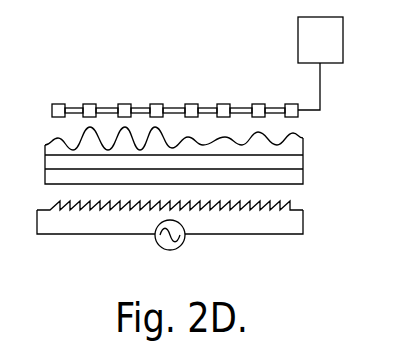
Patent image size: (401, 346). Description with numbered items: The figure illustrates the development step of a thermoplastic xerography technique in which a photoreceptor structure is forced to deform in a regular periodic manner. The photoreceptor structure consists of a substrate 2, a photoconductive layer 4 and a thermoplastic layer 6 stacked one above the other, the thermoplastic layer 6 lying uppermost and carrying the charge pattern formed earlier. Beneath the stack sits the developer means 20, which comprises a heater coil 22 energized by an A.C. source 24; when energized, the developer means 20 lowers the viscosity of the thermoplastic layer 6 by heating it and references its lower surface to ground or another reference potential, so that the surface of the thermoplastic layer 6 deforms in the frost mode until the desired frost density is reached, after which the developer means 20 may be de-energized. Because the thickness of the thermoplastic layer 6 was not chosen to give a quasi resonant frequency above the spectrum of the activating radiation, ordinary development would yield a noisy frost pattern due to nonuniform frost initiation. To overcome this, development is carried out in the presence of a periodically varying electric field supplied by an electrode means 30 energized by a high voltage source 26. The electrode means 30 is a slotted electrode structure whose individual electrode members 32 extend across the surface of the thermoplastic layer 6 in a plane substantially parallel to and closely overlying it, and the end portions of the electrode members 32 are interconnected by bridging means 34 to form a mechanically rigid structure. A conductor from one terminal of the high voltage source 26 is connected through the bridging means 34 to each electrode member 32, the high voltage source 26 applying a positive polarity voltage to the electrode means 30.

The substrate 2 is at (303, 173).
The photoconductive layer 4 is at (303, 160).
The thermoplastic layer 6 is at (303, 145).
The developer means 20 is at (200, 239).
The heater coil 22 is at (93, 205).
The A.C. source 24 is at (178, 248).
The high voltage source 26 is at (298, 48).
The electrode means 30 is at (298, 116).
The individual electrode members 32 is at (58, 104).
The bridging means 34 is at (75, 117).